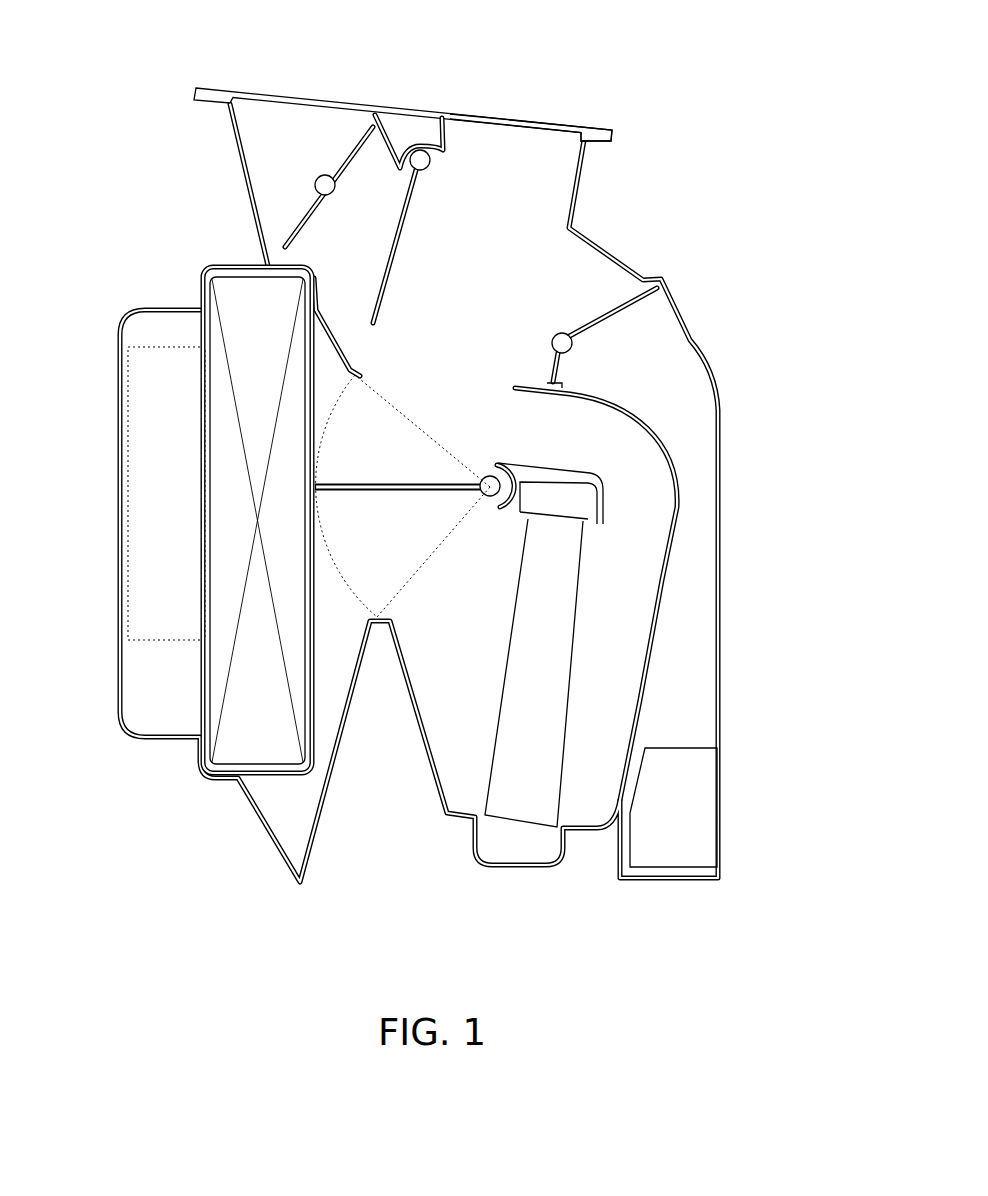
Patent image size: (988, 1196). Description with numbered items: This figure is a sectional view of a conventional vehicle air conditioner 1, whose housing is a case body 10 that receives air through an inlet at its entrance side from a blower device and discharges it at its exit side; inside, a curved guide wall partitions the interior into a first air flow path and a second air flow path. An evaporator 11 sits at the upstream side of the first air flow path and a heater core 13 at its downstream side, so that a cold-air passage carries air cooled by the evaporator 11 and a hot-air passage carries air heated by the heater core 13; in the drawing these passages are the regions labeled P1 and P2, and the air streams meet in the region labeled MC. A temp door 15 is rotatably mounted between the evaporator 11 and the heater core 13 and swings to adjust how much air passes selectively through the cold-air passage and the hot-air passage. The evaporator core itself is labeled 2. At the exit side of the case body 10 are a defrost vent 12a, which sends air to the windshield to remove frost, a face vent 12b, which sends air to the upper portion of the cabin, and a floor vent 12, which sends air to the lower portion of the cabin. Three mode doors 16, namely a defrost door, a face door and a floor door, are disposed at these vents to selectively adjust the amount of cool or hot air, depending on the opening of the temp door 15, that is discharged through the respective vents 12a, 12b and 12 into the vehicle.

The air conditioner for vehicle 1 is at (628, 213).
The evaporator 2 is at (232, 755).
The case body 10 is at (721, 573).
The evaporator 11 is at (130, 628).
The floor vent 12 is at (677, 840).
The defrost vent 12a is at (296, 122).
The face vent 12b is at (540, 170).
The heater core 13 is at (517, 840).
The temp door 15 is at (343, 490).
The mode doors (defrost door, face door, floor door) 16 is at (413, 217).
The mixing chamber MC is at (480, 394).
The first passage P1 is at (418, 454).
The second passage P2 is at (466, 589).